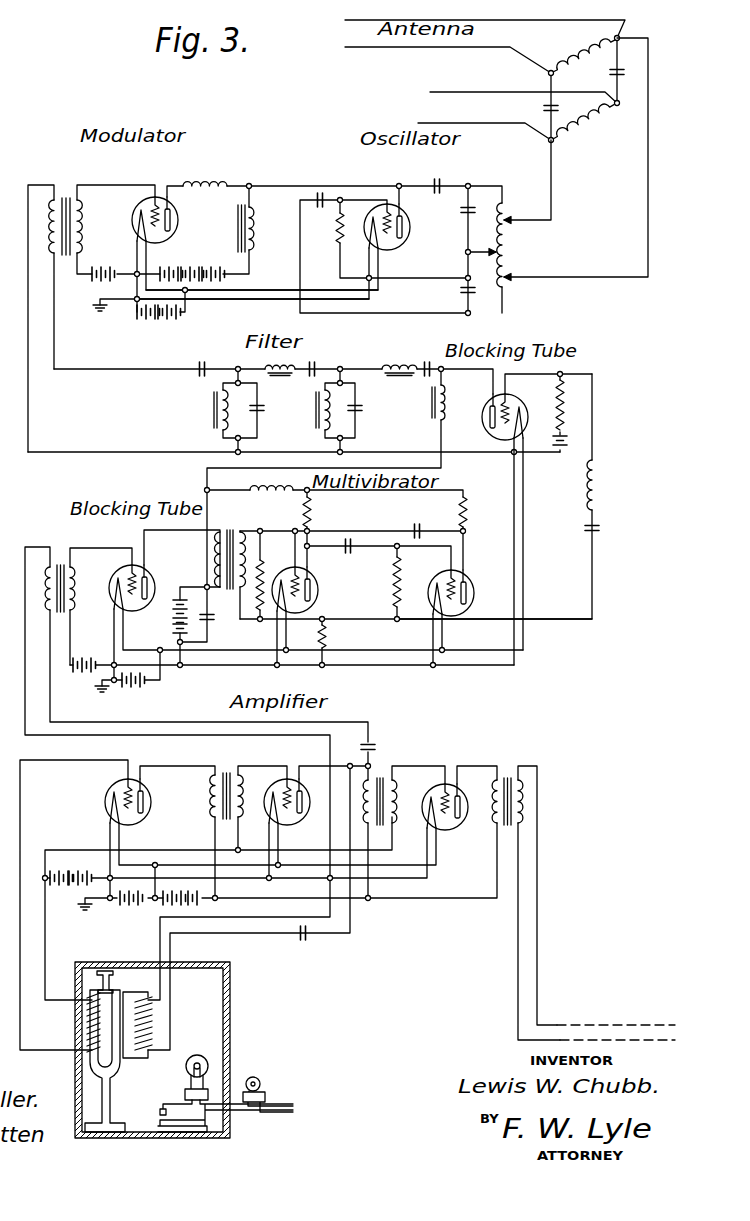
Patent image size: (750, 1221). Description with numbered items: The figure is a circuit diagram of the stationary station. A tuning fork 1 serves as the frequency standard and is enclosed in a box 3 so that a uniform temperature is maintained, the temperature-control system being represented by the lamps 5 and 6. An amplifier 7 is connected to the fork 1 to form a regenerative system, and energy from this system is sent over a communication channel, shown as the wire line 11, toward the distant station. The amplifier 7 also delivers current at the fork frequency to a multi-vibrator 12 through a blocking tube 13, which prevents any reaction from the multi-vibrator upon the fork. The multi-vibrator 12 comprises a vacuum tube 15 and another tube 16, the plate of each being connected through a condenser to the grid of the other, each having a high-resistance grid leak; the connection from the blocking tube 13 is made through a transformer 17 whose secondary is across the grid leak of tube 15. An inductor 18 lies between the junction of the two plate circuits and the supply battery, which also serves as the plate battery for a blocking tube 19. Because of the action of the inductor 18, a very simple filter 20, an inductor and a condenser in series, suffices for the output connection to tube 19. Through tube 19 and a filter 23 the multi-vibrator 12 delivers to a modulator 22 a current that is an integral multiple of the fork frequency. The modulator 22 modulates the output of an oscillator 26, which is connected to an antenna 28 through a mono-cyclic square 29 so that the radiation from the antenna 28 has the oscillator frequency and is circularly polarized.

The tuning fork 1 is at (114, 1072).
The box 3 is at (231, 1004).
The lamp 5 is at (207, 1063).
The lamp 6 is at (261, 1080).
The amplifier 7 is at (276, 760).
The wire line 11 is at (612, 1022).
The multi-vibrator 12 is at (331, 589).
The blocking tube 13 is at (150, 577).
The vacuum tube 15 is at (318, 590).
The tube 16 is at (470, 582).
The transformer 17 is at (232, 530).
The inductor 18 is at (292, 496).
The blocking tube 19 is at (521, 410).
The filter 20 is at (632, 500).
The modulator 22 is at (152, 177).
The filter 23 is at (362, 362).
The oscillator 26 is at (420, 179).
The antenna 28 is at (494, 47).
The mono-cyclic square 29 is at (603, 91).